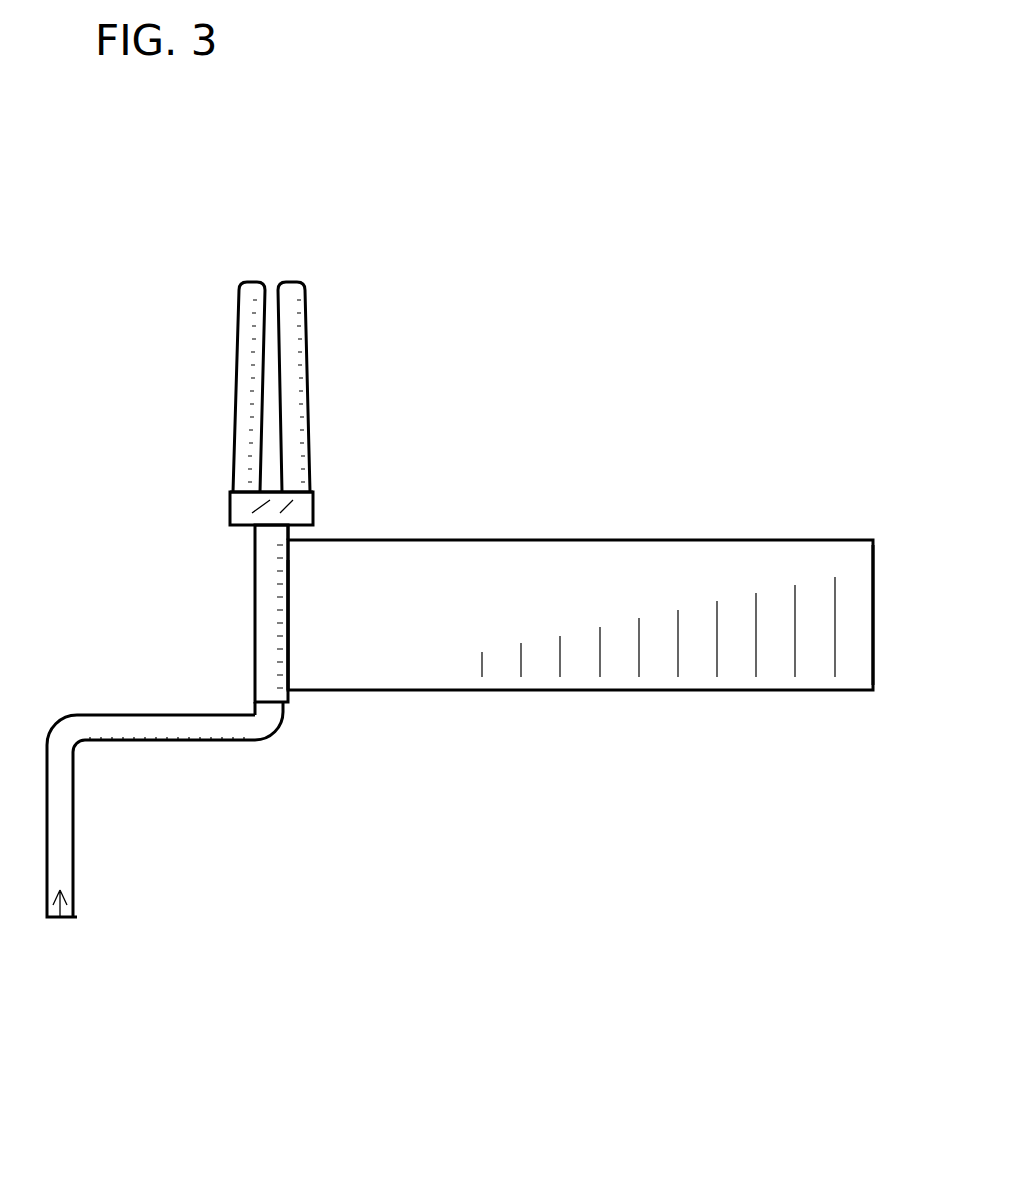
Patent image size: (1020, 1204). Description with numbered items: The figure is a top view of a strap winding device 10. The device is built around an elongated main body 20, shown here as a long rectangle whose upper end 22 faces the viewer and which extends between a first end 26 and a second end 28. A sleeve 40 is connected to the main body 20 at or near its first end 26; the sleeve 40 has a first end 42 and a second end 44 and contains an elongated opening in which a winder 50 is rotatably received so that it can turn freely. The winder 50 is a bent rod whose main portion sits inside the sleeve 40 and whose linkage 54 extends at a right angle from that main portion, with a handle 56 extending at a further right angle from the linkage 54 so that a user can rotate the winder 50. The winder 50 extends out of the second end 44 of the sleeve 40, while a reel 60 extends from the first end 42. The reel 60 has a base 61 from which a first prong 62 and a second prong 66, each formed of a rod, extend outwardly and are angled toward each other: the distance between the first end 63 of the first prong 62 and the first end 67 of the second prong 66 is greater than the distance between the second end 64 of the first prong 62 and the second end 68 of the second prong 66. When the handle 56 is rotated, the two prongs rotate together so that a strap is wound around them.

The strap winding device 10 is at (612, 268).
The main body 20 is at (623, 598).
The upper end 22 is at (558, 577).
The first end 26 is at (290, 633).
The second end 28 is at (875, 617).
The sleeve 40 is at (262, 613).
The first end 42 is at (272, 525).
The second end 44 is at (283, 707).
The winder 50 is at (60, 917).
The linkage 54 is at (177, 727).
The handle 56 is at (63, 837).
The reel 60 is at (236, 351).
The base 61 is at (232, 492).
The first prong 62 is at (238, 310).
The first end 63 is at (237, 525).
The second end 64 is at (253, 282).
The second prong 66 is at (305, 313).
The first end 67 is at (308, 527).
The second end 68 is at (292, 282).